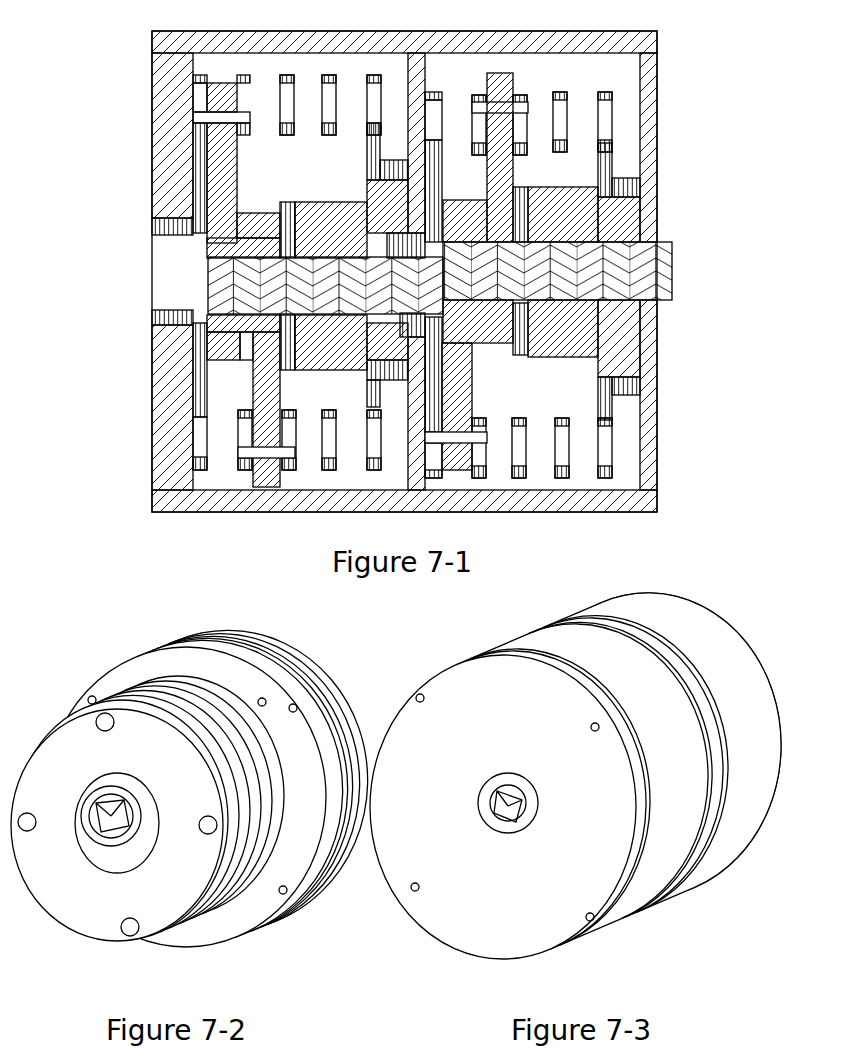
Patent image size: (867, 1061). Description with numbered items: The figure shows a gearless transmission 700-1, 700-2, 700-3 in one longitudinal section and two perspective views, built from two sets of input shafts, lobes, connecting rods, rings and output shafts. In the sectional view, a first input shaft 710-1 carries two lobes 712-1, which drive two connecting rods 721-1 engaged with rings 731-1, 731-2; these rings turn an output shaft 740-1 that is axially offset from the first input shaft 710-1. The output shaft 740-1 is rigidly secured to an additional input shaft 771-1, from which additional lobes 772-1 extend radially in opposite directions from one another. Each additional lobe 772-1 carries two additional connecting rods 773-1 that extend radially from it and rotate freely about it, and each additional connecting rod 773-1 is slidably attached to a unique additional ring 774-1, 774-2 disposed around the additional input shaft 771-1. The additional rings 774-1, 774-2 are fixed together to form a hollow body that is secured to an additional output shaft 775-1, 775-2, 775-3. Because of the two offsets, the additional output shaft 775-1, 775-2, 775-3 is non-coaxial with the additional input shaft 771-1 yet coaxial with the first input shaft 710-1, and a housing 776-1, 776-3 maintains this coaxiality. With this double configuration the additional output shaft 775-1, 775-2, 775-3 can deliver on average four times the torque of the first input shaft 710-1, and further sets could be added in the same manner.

In FIG. 7-1, the gearless transmission 700-1 is at (120, 205).
In FIG. 7-1, the first input shaft 710-1 is at (613, 277).
In FIG. 7-1, the lobes 712-1 is at (472, 308).
In FIG. 7-1, the connecting rods 721-1 is at (453, 213).
In FIG. 7-1, the rings 731-1 is at (517, 95).
In FIG. 7-1, the output shaft 740-1 is at (400, 325).
In FIG. 7-1, the additional input shaft 771-1 is at (342, 288).
In FIG. 7-1, the additional lobes 772-1 is at (313, 325).
In FIG. 7-1, the additional connecting rods 773-1 is at (263, 227).
In FIG. 7-1, the additional rings 774-1 is at (285, 88).
In FIG. 7-1, the additional output shaft 775-1 is at (178, 320).
In FIG. 7-1, the housing 776-1 is at (628, 498).
In FIG. 7-2, the gearless transmission 700-2 is at (88, 648).
In FIG. 7-2, the rings 731-2 is at (308, 703).
In FIG. 7-2, the additional rings 774-2 is at (253, 830).
In FIG. 7-2, the additional output shaft 775-2 is at (90, 843).
In FIG. 7-3, the gearless transmission 700-3 is at (720, 610).
In FIG. 7-3, the additional output shaft 775-3 is at (493, 818).
In FIG. 7-3, the housing 776-3 is at (652, 878).